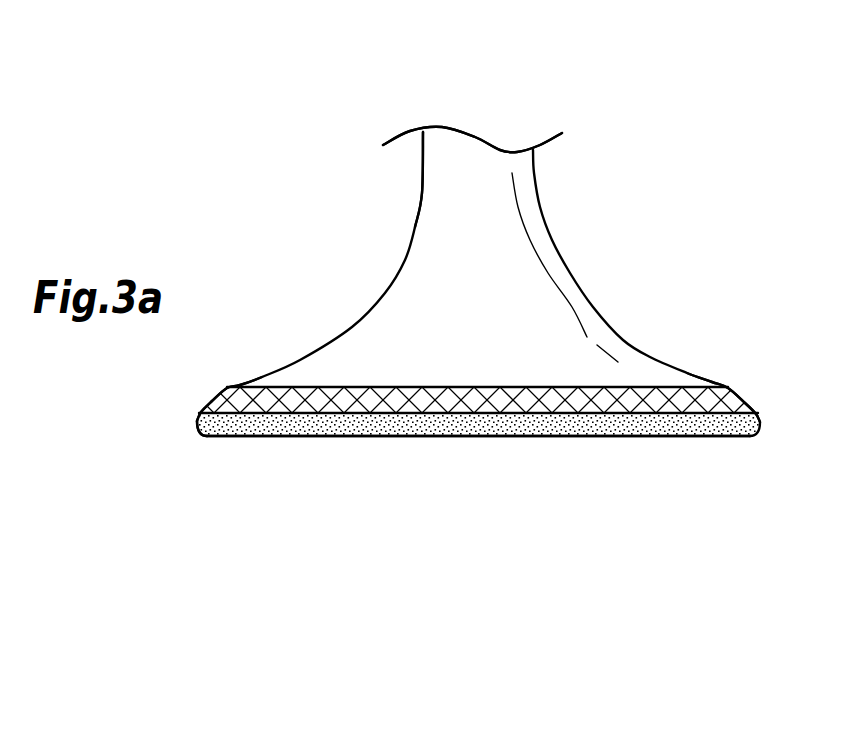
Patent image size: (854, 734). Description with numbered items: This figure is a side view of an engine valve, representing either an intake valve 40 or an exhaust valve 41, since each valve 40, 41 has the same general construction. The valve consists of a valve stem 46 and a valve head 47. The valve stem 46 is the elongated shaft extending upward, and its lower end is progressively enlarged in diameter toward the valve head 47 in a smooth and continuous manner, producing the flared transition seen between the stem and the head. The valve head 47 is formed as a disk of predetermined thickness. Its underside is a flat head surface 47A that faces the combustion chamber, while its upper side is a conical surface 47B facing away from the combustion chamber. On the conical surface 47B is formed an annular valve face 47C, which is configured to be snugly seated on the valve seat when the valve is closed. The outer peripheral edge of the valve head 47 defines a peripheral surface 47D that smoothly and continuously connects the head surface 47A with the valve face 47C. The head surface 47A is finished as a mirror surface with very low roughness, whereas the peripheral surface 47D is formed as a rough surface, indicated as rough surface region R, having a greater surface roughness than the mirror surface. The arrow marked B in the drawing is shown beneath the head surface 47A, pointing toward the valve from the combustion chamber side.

The intake valve 40 is at (585, 95).
The exhaust valve 41 is at (472, 140).
The valve stem 46 is at (437, 192).
The valve head 47 is at (345, 345).
The head surface 47A is at (613, 437).
The conical surface 47B is at (267, 370).
The valve face 47C is at (647, 392).
The peripheral surface 47D is at (347, 427).
The rough surface region R is at (247, 427).
The bottom direction B is at (478, 480).